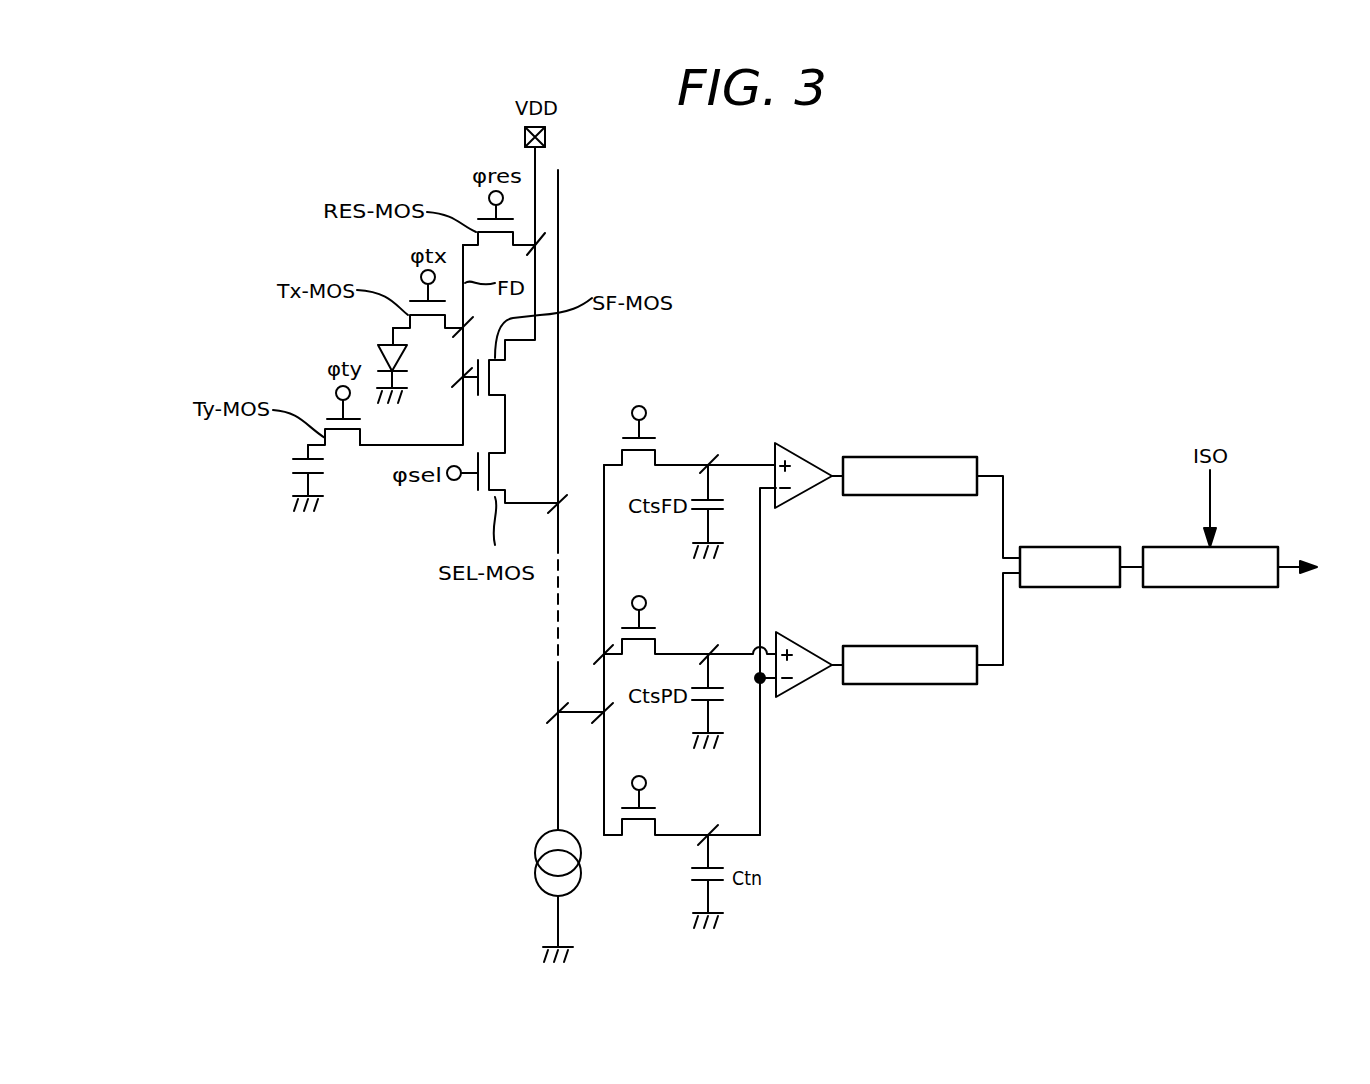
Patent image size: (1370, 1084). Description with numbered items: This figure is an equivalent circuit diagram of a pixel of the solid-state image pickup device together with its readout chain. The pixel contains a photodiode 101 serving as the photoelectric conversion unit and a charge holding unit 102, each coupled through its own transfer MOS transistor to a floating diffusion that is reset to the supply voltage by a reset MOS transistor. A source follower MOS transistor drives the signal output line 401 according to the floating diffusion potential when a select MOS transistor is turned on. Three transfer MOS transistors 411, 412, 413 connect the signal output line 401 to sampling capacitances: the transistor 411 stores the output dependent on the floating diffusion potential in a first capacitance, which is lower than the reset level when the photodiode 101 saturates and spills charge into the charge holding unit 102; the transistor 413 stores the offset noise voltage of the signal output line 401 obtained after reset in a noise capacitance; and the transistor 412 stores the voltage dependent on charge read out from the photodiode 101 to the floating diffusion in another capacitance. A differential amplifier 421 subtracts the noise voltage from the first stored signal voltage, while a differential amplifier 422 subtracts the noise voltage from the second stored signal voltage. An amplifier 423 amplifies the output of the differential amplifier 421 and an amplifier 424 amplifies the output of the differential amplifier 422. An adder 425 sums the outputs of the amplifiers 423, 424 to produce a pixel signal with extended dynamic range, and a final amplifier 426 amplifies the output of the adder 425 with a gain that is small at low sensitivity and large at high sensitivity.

The photodiode 101 is at (383, 355).
The charge holding unit 102 is at (295, 483).
The signal output line 401 is at (557, 763).
The transfer MOS transistor 411 is at (657, 458).
The transfer MOS transistor 412 is at (657, 648).
The transfer MOS transistor 413 is at (657, 830).
The differential amplifier 421 is at (811, 457).
The differential amplifier 422 is at (805, 683).
The amplifier 423 is at (910, 457).
The amplifier 424 is at (910, 645).
The adder 425 is at (1070, 547).
The amplifier 426 is at (1250, 547).